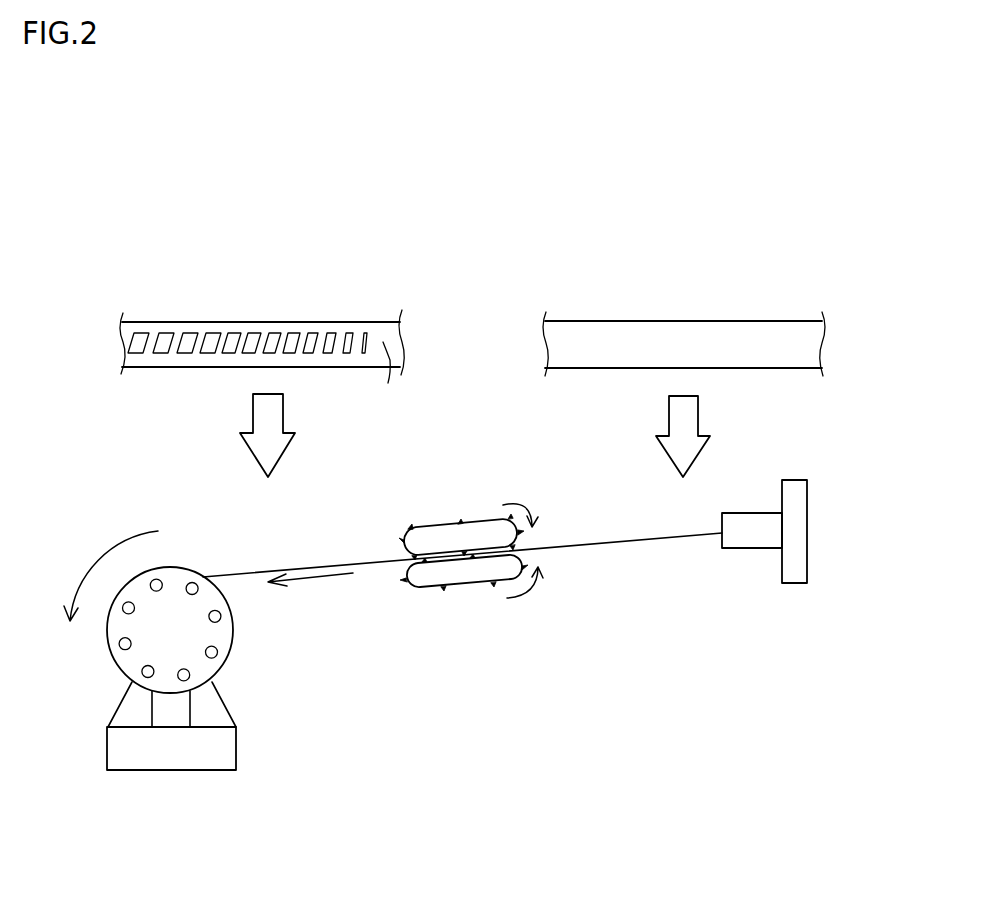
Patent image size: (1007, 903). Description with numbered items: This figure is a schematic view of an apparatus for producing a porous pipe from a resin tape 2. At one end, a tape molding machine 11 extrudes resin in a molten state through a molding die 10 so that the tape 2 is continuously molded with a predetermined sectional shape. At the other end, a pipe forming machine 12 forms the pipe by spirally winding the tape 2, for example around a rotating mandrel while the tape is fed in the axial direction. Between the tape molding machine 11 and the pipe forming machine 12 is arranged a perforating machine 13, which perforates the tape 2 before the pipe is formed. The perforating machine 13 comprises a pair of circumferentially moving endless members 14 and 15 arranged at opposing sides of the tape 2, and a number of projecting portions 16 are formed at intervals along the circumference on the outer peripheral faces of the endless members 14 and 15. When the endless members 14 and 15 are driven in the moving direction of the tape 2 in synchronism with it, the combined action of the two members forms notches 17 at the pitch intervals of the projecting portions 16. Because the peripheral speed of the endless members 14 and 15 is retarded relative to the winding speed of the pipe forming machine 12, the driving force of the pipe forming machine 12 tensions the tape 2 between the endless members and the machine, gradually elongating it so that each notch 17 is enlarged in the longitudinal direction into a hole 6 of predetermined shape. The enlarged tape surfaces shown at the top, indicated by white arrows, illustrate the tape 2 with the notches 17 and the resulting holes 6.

The resin tape 2 is at (353, 328).
The hole 6 is at (235, 330).
The molding die 10 is at (750, 535).
The tape molding machine 11 is at (762, 473).
The pipe forming machine 12 is at (191, 553).
The perforating machine 13 is at (461, 531).
The endless member 14 is at (438, 535).
The endless member 15 is at (472, 587).
The projecting portions 16 is at (512, 518).
The notch 17 is at (392, 381).